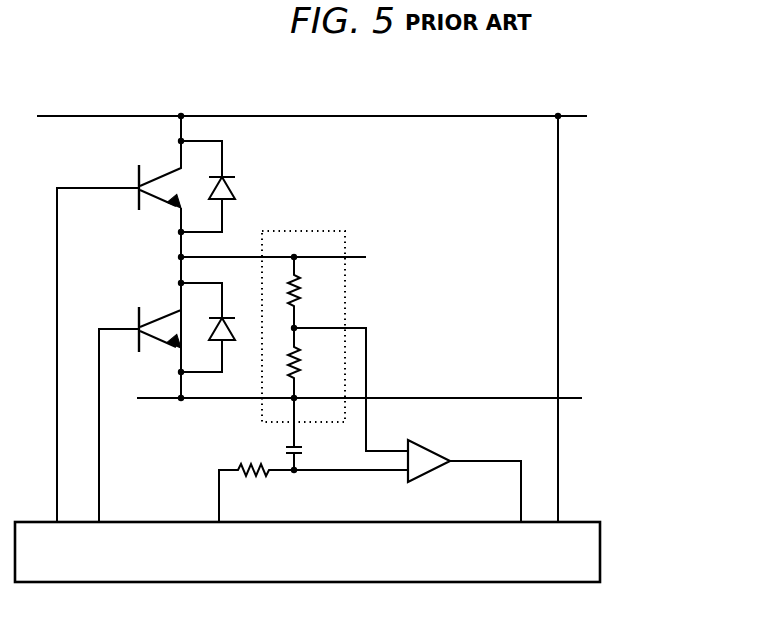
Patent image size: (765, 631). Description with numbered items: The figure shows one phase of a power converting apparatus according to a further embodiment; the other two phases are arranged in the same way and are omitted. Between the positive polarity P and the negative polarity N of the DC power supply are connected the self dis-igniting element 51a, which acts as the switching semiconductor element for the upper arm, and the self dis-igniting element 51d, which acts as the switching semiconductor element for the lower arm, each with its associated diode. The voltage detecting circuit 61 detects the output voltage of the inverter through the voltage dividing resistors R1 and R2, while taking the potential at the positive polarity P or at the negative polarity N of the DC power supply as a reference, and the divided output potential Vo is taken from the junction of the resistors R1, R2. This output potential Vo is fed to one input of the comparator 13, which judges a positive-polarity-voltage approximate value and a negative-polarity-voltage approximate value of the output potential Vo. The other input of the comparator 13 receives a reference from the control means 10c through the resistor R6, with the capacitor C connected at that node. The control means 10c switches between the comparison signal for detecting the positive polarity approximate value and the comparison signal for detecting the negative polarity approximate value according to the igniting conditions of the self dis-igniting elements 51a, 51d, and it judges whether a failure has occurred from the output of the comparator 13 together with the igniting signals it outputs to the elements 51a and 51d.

The self dis-igniting element 51a is at (138, 169).
The self dis-igniting element 51d is at (138, 311).
The voltage detecting circuit 61 is at (303, 307).
The comparator 13 is at (429, 442).
The control means 10c is at (601, 552).
The positive polarity of DC power supply P is at (280, 114).
The negative polarity of DC power supply N is at (197, 401).
The voltage dividing resistor R1 is at (311, 292).
The voltage dividing resistor R2 is at (311, 363).
The resistor R6 is at (313, 482).
The capacitor C is at (304, 435).
The output potential Vo is at (351, 376).